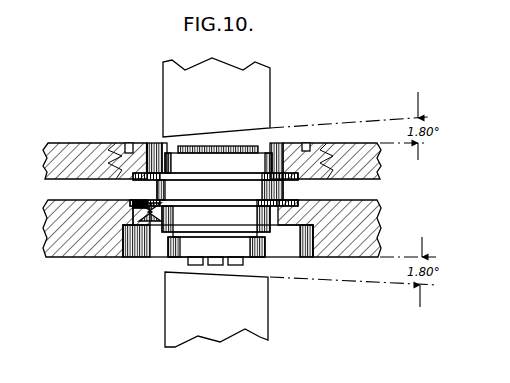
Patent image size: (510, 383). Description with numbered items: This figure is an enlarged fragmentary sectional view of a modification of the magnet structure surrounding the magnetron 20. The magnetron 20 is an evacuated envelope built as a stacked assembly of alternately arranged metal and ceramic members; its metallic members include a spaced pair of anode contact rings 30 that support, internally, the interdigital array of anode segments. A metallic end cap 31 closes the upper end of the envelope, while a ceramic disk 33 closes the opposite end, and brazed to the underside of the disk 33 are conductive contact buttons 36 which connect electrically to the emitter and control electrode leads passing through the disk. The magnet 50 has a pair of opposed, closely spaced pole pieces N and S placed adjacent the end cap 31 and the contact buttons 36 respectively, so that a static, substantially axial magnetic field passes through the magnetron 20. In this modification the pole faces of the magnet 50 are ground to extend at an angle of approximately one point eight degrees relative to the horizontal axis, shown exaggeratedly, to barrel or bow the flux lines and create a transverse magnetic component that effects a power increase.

The magnetron 20 is at (223, 199).
The anode contact rings 30 is at (146, 203).
The metallic end cap 31 is at (178, 150).
The ceramic disk 33 is at (183, 250).
The conductive contact buttons 36 is at (196, 265).
The magnet 50 is at (163, 75).